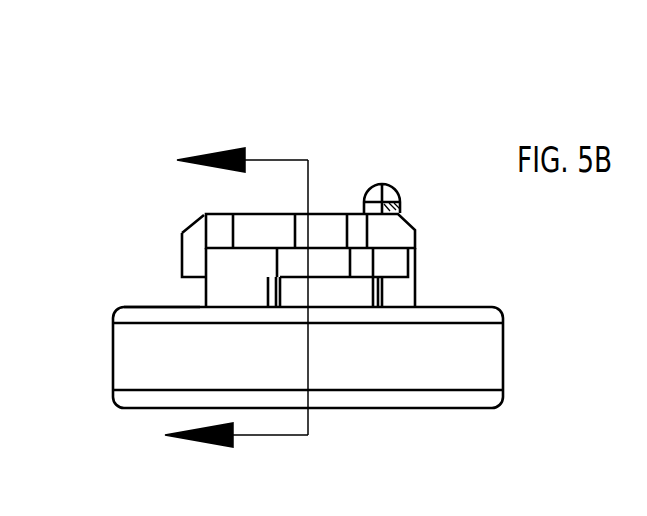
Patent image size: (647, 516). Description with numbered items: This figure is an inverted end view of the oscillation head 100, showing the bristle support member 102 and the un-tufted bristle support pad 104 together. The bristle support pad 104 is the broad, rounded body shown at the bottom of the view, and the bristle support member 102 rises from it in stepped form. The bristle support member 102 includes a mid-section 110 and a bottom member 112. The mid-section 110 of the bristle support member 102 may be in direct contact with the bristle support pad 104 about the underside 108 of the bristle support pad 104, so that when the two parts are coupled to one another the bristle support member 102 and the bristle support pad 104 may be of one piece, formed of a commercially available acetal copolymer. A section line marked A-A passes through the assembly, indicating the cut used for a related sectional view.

The oscillation head 100 is at (437, 148).
The bristle support member 102 is at (180, 218).
The bristle support pad 104 is at (433, 365).
The underside 108 is at (123, 308).
The mid-section 110 is at (410, 292).
The bottom member 112 is at (177, 240).